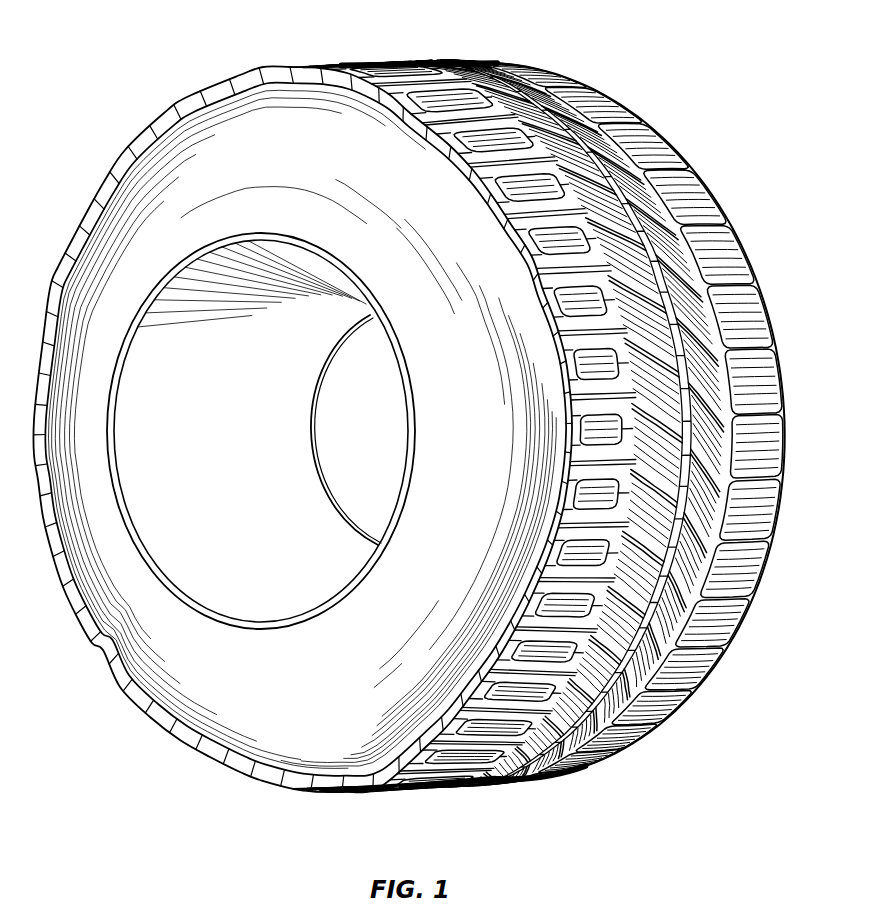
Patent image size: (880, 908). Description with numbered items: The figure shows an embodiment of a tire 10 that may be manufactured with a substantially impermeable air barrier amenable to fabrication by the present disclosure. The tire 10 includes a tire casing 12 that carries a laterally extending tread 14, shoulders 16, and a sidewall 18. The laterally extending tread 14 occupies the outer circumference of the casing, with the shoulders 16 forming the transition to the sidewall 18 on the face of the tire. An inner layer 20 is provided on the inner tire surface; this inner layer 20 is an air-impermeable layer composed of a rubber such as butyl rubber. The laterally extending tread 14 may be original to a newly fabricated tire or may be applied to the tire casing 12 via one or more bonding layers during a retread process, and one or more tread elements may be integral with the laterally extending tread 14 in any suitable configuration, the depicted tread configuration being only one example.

The tire 10 is at (733, 48).
The tire casing 12 is at (152, 293).
The laterally extending tread 14 is at (100, 182).
The shoulders 16 is at (282, 68).
The sidewall 18 is at (172, 675).
The inner layer 20 is at (285, 597).